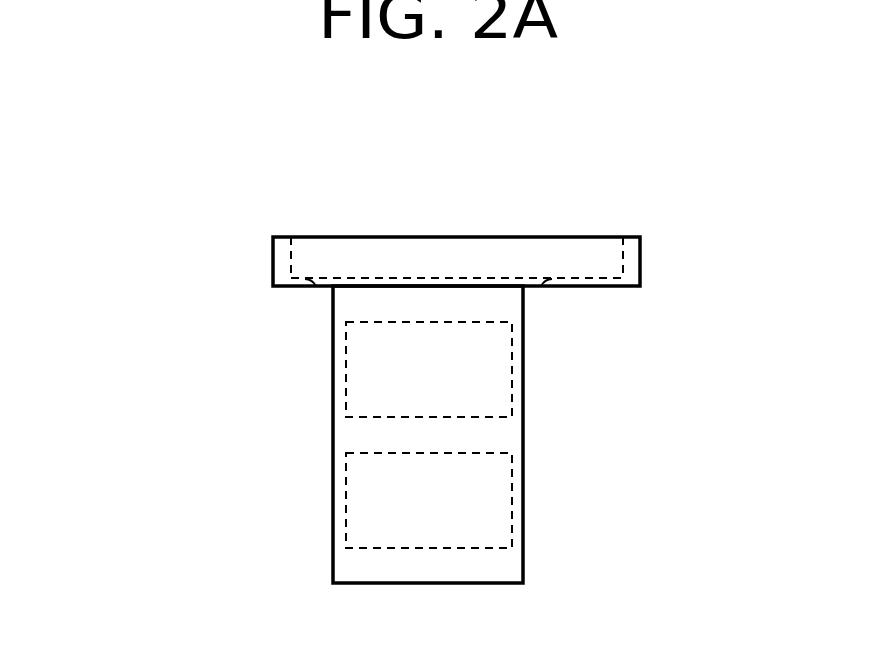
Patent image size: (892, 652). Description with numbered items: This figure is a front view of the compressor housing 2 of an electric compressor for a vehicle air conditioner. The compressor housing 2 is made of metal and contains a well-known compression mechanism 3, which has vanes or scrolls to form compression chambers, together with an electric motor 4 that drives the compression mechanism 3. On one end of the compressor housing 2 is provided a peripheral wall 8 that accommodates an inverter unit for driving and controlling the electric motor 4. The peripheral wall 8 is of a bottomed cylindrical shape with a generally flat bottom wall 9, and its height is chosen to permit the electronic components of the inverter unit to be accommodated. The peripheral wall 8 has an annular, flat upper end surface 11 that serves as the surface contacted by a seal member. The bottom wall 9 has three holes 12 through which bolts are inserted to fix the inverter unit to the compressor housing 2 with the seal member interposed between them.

The compressor housing 2 is at (333, 433).
The compression mechanism 3 is at (512, 506).
The electric motor 4 is at (512, 367).
The peripheral wall 8 is at (273, 262).
The bottom wall 9 is at (442, 278).
The upper end surface 11 is at (627, 236).
The holes 12 is at (318, 290).